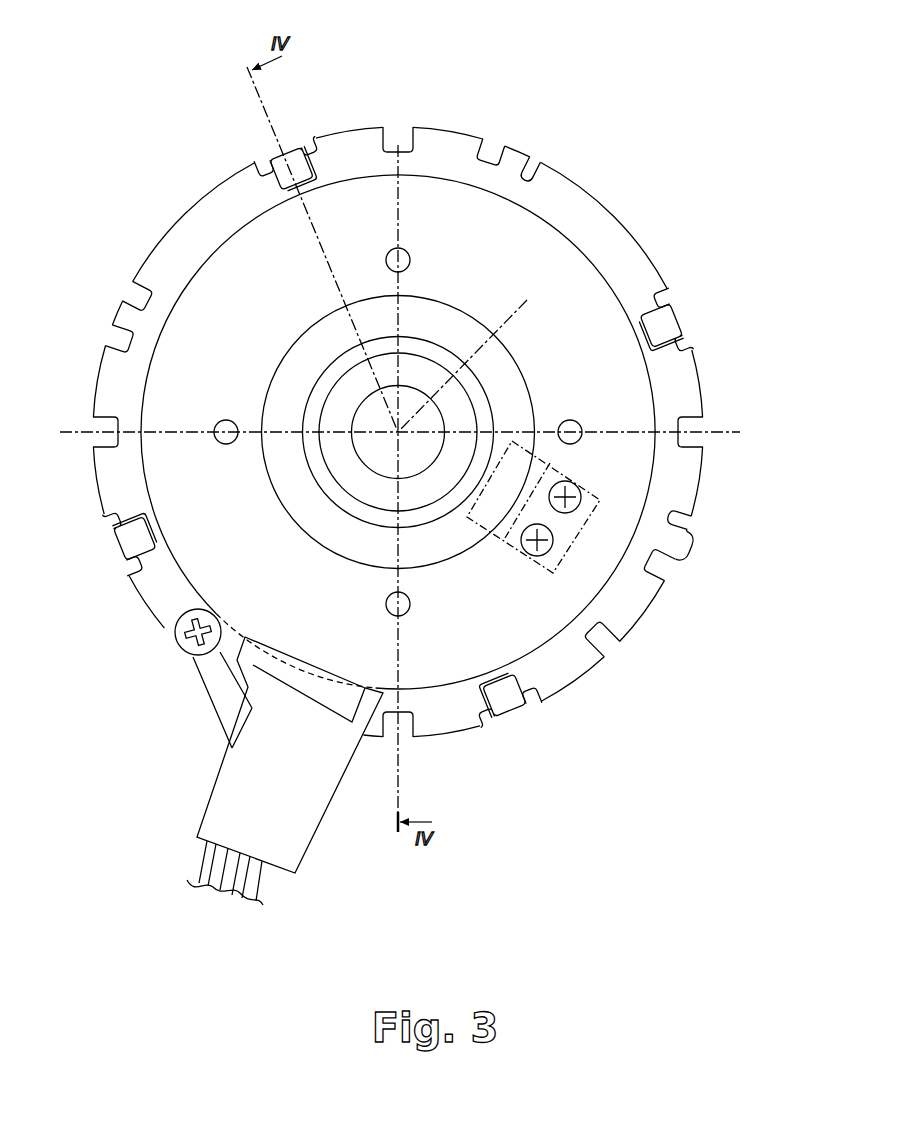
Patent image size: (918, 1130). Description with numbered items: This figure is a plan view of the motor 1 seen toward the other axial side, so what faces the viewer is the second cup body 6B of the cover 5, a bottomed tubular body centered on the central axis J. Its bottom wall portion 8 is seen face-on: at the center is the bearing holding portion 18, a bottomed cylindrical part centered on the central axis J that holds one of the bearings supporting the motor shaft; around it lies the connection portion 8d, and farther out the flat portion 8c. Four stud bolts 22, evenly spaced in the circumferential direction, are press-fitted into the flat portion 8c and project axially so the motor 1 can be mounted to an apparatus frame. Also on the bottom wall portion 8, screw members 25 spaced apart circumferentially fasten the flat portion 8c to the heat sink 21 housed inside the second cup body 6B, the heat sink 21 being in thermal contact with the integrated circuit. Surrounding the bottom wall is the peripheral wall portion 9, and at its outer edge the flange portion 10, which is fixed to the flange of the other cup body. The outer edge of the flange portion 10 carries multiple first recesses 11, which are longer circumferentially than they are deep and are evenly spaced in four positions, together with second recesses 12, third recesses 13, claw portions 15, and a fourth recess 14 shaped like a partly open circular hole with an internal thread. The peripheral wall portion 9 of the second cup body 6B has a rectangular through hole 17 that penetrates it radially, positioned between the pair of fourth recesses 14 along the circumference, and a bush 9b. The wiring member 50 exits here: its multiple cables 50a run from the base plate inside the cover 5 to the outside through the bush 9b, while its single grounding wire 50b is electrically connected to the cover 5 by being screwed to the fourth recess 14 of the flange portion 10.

The motor 1 is at (668, 82).
The cover 5 is at (190, 197).
The second cup body 6B is at (432, 168).
The bottom wall portion 8 is at (603, 378).
The flat portion 8c is at (185, 355).
The connection portion 8d is at (302, 355).
The peripheral wall portion 9 is at (604, 268).
The bush 9b is at (237, 782).
The flange portion 10 is at (598, 213).
The first recess 11 is at (303, 155).
The second recess 12 is at (527, 168).
The third recess 13 is at (390, 128).
The fourth recess 14 is at (610, 646).
The claw portion 15 is at (280, 158).
The through hole 17 is at (358, 708).
The bearing holding portion 18 is at (460, 457).
The heat sink 21 is at (539, 577).
The stud bolt 22 is at (584, 425).
The screw member 25 is at (595, 500).
The wiring member 50 is at (196, 857).
The cable 50a is at (263, 882).
The grounding wire 50b is at (218, 690).
The central axis J is at (469, 355).